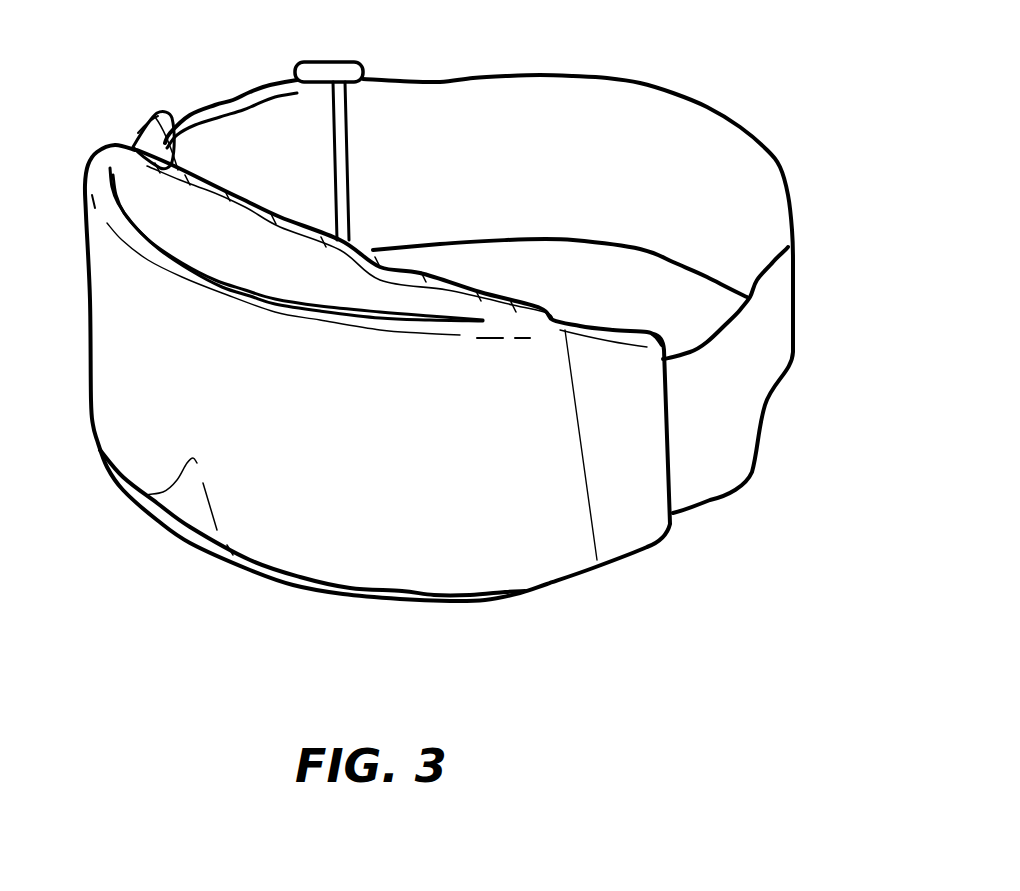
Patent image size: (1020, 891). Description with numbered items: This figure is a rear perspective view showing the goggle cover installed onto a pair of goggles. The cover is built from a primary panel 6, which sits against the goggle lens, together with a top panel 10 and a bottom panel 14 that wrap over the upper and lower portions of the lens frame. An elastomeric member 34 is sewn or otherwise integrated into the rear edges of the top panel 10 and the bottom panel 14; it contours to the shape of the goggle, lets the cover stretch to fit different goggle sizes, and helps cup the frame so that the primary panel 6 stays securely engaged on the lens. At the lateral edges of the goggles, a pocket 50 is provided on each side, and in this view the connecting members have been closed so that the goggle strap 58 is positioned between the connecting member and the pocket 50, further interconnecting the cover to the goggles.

The primary panel 6 is at (377, 406).
The top panel 10 is at (446, 365).
The bottom panel 14 is at (187, 547).
The elastomeric member 34 is at (353, 243).
The pocket 50 is at (151, 132).
The goggle strap 58 is at (737, 177).